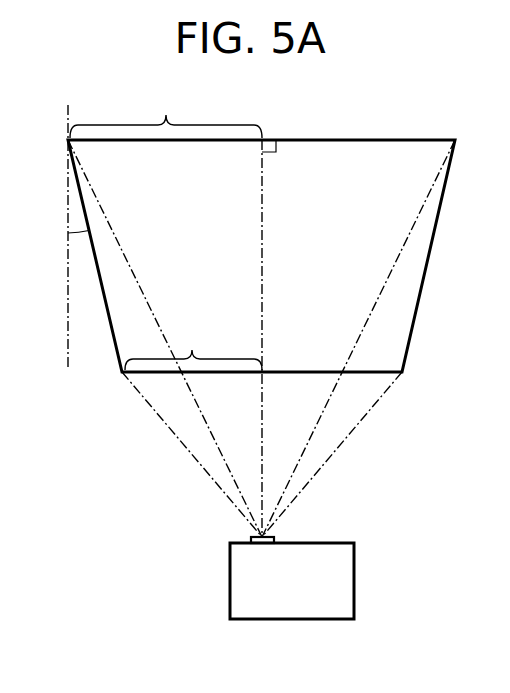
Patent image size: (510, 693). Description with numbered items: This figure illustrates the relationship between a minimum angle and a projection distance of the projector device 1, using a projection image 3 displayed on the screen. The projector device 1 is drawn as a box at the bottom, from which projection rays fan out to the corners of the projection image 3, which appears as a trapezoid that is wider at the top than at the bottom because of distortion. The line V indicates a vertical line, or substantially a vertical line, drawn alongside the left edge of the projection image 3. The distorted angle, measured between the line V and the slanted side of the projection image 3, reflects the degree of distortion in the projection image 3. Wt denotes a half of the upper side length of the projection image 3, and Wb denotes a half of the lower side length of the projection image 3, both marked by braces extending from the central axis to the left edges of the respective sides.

The projector device 1 is at (354, 580).
The projection image 3 is at (430, 246).
The vertical line V is at (68, 325).
The half of the upper side length of the projection image Wt is at (166, 114).
The half of the lower side length of the projection image Wb is at (193, 348).